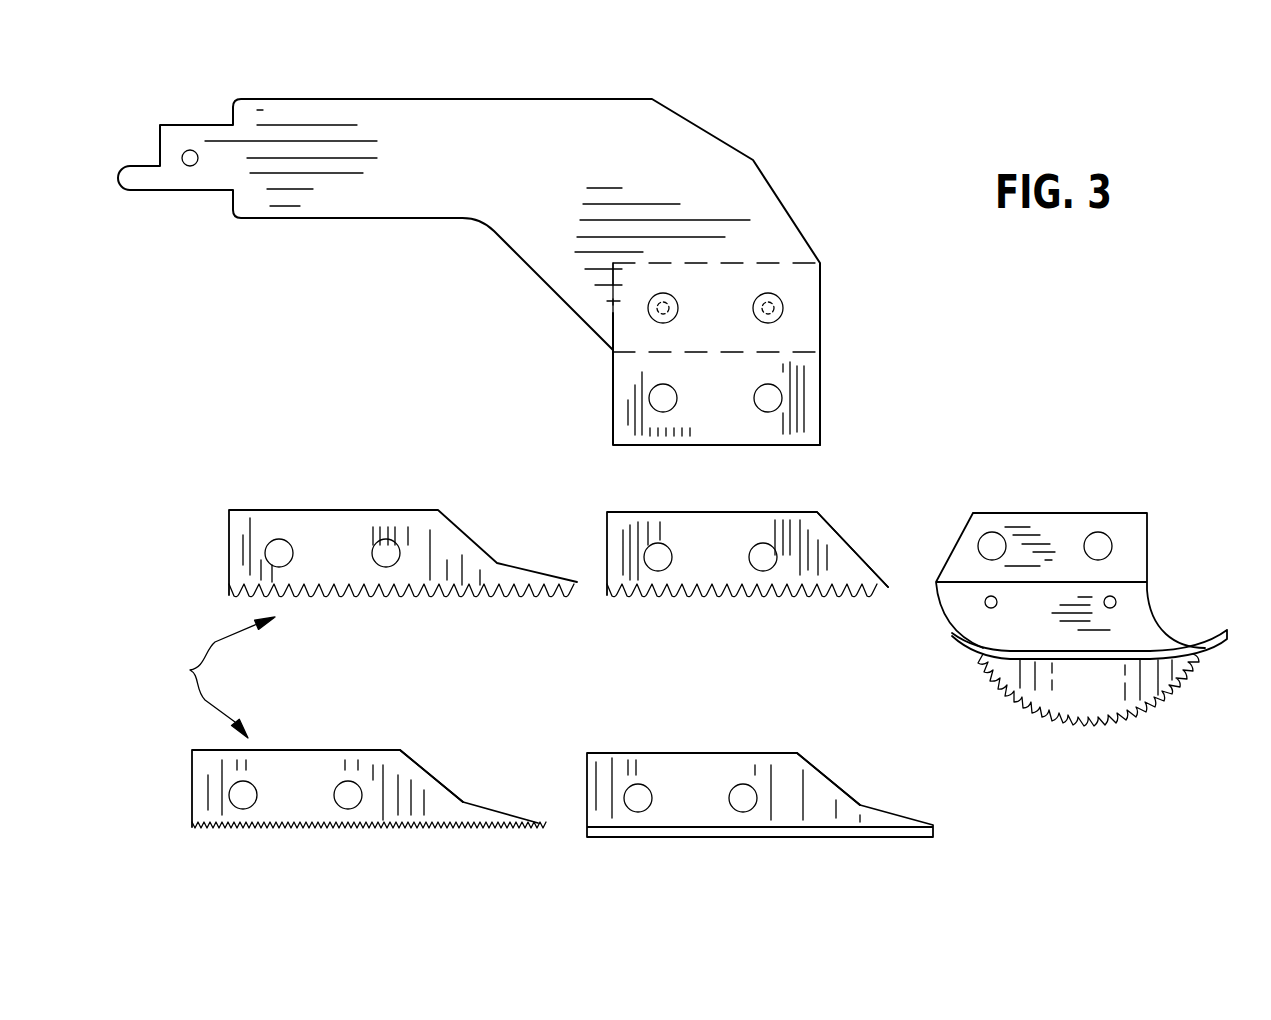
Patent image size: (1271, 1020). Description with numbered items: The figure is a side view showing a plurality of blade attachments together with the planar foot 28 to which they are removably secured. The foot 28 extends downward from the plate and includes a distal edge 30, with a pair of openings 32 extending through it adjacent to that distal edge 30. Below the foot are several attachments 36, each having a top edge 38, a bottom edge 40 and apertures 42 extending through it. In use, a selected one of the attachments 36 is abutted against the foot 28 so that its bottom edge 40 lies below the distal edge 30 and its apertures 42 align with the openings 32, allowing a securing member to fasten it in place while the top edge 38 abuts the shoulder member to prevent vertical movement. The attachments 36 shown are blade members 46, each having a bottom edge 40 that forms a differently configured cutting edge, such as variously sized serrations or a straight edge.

The foot 28 is at (627, 368).
The distal edge 30 is at (767, 446).
The opening 32 is at (782, 392).
The attachments 36 is at (212, 677).
The top edge 38 is at (325, 508).
The bottom edge 40 is at (383, 595).
The aperture 42 is at (241, 806).
The blade members 46 is at (840, 545).